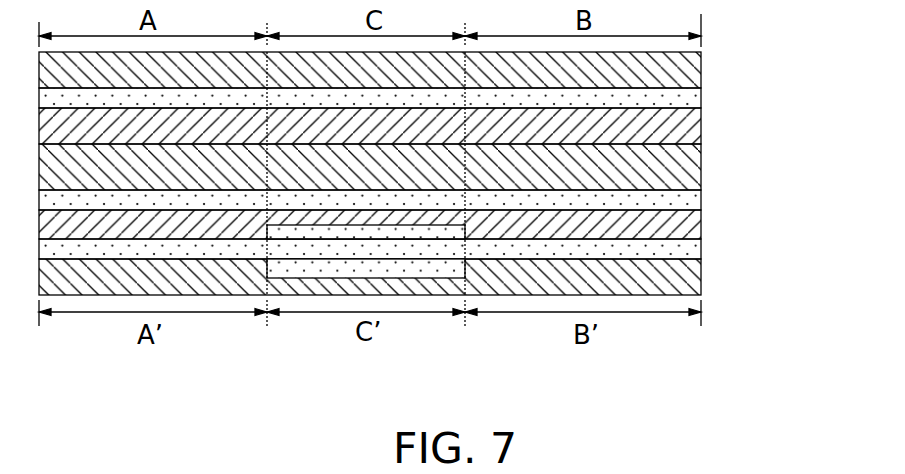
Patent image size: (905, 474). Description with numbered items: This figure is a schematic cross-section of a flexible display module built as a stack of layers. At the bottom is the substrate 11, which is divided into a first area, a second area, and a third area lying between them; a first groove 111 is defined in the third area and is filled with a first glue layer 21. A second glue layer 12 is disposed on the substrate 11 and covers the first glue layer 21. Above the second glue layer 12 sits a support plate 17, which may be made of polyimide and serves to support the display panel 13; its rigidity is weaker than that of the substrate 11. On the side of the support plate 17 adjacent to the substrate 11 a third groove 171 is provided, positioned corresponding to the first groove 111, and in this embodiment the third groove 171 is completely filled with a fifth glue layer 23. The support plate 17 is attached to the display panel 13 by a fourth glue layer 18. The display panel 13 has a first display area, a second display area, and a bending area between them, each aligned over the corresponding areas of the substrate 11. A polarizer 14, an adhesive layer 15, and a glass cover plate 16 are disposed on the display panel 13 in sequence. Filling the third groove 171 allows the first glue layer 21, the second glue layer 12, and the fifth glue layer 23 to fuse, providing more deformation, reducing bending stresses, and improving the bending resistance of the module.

The substrate 11 is at (691, 283).
The second glue layer 12 is at (691, 250).
The display panel 13 is at (689, 162).
The polarizer 14 is at (689, 126).
The adhesive layer 15 is at (689, 97).
The glass cover plate 16 is at (687, 60).
The support plate 17 is at (691, 222).
The fourth glue layer 18 is at (691, 200).
The first glue layer 21 is at (290, 268).
The fifth glue layer 23 is at (335, 230).
The first groove 111 is at (367, 270).
The third groove 171 is at (440, 227).